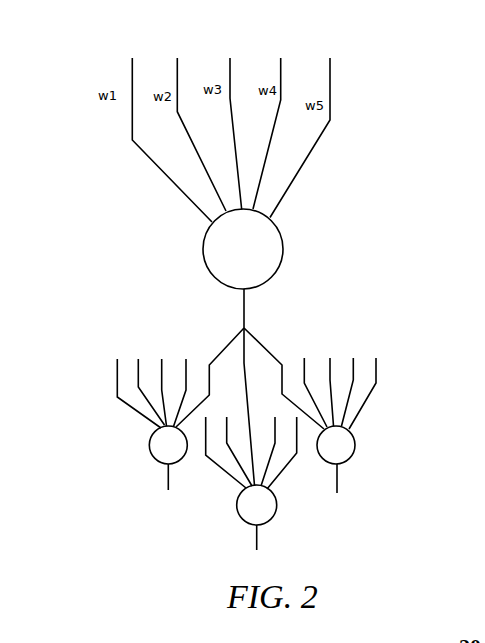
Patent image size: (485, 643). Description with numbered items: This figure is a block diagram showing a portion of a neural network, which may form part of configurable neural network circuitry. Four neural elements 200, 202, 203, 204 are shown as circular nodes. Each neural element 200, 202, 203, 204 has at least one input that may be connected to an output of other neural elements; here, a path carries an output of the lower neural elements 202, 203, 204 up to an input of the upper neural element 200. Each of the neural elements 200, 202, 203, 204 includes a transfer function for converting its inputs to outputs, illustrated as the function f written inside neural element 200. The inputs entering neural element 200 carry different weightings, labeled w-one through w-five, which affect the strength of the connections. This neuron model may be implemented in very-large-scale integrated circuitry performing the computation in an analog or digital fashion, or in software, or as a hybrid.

The neural element 200 is at (203, 250).
The neural element 202 is at (252, 309).
The neural element 203 is at (238, 513).
The neural element 204 is at (350, 445).